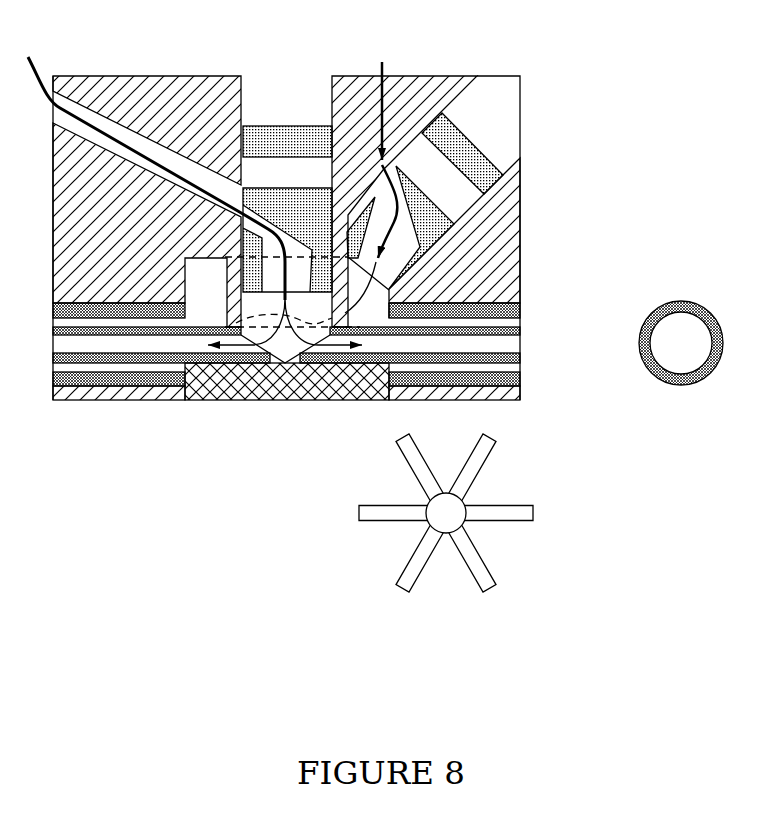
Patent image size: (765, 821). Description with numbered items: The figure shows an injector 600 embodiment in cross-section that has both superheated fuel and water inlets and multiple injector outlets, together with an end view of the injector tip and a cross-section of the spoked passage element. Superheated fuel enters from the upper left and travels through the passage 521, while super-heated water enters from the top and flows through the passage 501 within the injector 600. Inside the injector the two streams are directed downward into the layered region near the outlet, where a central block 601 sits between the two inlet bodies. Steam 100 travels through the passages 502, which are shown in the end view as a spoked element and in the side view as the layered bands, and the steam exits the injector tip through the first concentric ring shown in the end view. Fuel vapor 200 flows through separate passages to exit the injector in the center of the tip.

The steam 100 is at (663, 362).
The fuel vapor 200 is at (678, 342).
The passage 501 is at (378, 175).
The passages 502 is at (389, 326).
The passage 521 is at (195, 188).
The injector 600 is at (517, 55).
The ferrule block 601 is at (283, 113).